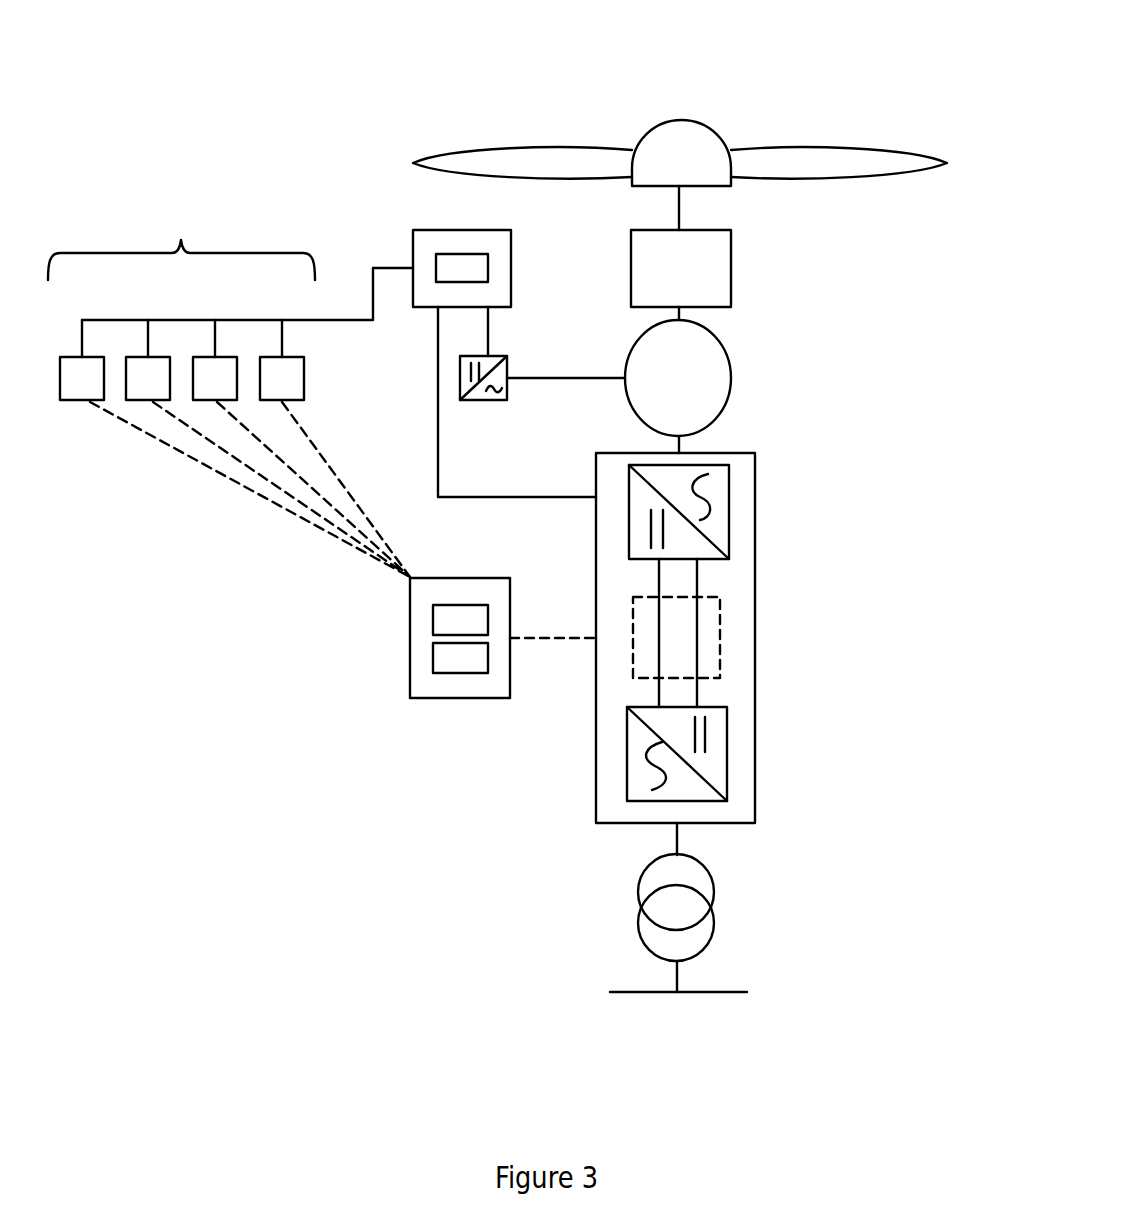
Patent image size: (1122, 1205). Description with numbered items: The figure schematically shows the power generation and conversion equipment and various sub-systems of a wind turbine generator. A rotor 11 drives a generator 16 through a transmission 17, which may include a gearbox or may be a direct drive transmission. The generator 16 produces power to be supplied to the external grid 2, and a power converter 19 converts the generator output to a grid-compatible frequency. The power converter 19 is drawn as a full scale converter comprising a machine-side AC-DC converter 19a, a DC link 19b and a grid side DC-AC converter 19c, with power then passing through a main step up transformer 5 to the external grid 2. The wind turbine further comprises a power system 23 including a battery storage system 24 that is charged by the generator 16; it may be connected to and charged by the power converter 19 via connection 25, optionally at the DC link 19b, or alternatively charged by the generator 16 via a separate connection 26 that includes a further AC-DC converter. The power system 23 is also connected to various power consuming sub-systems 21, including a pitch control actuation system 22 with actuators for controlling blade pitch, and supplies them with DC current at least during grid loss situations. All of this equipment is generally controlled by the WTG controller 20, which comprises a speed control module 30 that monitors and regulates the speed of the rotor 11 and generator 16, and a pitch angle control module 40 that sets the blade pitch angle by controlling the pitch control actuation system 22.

The rotor 11 is at (707, 127).
The transmission 17 is at (733, 256).
The generator 16 is at (733, 368).
The power converter 19 is at (757, 455).
The machine-side AC-DC converter 19a is at (731, 512).
The DC link 19b is at (722, 635).
The grid side DC-AC converter 19c is at (728, 748).
The main step up transformer 5 is at (715, 883).
The external grid 2 is at (732, 987).
The power system 23 is at (513, 240).
The battery storage system 24 is at (489, 270).
The connection 26 is at (549, 380).
The connection 25 is at (460, 495).
The power consuming sub-systems 21 is at (181, 252).
The pitch control actuation system 22 is at (58, 401).
The WTG controller 20 is at (467, 702).
The speed control module 30 is at (430, 622).
The pitch angle control module 40 is at (430, 660).